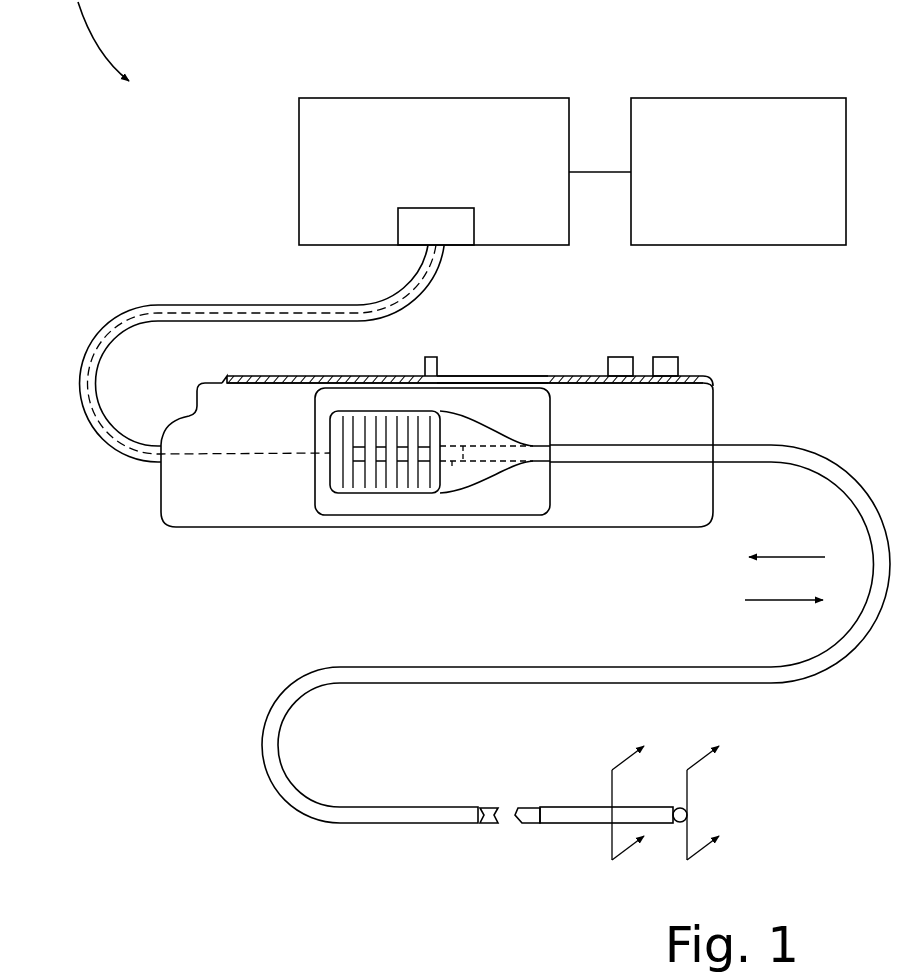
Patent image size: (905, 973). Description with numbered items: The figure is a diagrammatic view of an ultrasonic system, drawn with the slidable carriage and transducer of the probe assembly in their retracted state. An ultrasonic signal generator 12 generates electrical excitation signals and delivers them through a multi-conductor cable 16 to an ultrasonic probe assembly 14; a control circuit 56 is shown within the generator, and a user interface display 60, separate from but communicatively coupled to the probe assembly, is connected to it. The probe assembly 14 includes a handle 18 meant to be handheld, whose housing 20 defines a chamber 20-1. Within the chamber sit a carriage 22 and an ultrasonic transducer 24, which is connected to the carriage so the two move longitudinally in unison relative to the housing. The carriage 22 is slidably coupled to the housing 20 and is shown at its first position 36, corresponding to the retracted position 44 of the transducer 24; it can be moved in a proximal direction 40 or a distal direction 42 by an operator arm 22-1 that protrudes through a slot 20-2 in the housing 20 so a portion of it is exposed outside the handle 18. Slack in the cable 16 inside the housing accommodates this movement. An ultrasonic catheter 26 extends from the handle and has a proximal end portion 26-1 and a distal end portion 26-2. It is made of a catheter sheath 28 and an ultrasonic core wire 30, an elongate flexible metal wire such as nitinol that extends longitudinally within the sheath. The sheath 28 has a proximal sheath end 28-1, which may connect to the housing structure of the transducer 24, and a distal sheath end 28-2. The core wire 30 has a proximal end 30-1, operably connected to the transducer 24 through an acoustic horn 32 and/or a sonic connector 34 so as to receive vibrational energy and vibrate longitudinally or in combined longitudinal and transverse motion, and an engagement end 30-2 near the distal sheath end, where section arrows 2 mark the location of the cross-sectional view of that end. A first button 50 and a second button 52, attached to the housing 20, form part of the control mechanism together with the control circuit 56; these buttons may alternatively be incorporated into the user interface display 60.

The section line for FIG. 2 is at (673, 794).
The ultrasonic signal generator 12 is at (465, 171).
The ultrasonic probe assembly 14 is at (122, 790).
The multi-conductor cable 16 is at (160, 303).
The handle 18 is at (511, 455).
The housing 20 is at (352, 529).
The chamber 20-1 is at (235, 509).
The slot 20-2 is at (517, 377).
The carriage 22 is at (522, 516).
The operator arm 22-1 is at (438, 363).
The ultrasonic transducer 24 is at (392, 494).
The ultrasonic catheter 26 is at (523, 653).
The proximal end portion 26-1 is at (489, 468).
The distal end portion 26-2 is at (588, 830).
The catheter sheath 28 is at (812, 449).
The proximal sheath end 28-1 is at (549, 464).
The distal sheath end 28-2 is at (678, 806).
The ultrasonic core wire 30 is at (507, 463).
The proximal end 30-1 is at (467, 462).
The engagement end 30-2 is at (688, 814).
The acoustic horn 32 is at (505, 441).
The sonic connector 34 is at (452, 463).
The first position 36 is at (318, 523).
The proximal direction 40 is at (788, 557).
The distal direction 42 is at (779, 602).
The retracted position 44 is at (331, 407).
The first button 50 is at (665, 357).
The second button 52 is at (622, 357).
The control circuit 56 is at (436, 226).
The user interface display 60 is at (738, 171).